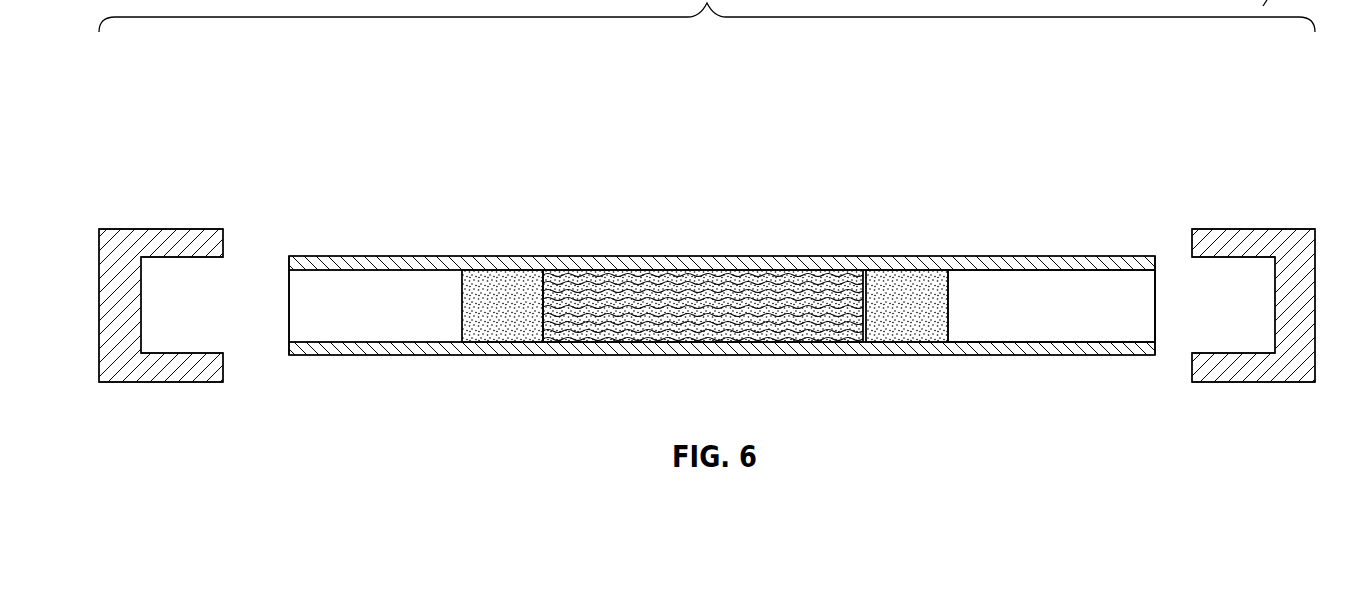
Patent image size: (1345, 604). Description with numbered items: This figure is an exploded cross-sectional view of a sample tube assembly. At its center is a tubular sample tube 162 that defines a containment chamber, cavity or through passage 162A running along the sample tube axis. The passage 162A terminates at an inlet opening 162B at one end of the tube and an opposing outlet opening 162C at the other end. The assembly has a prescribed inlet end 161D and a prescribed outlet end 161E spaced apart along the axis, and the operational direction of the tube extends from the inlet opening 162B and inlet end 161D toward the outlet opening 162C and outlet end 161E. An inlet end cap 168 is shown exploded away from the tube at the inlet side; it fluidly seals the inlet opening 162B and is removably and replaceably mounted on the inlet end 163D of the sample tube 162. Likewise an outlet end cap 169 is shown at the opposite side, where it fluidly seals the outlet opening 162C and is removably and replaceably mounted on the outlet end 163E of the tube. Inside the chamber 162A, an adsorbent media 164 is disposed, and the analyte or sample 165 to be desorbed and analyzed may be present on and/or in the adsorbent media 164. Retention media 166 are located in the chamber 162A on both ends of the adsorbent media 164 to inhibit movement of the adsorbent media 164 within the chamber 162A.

The inlet end 161D is at (143, 128).
The outlet end 161E is at (1286, 143).
The inlet end cap 168 is at (172, 237).
The outlet end cap 169 is at (1277, 236).
The sample tube 162 is at (412, 262).
The through passage 162A is at (1035, 288).
The inlet opening 162B is at (289, 312).
The outlet opening 162C is at (1155, 312).
The inlet end of the sample tube 163D is at (300, 228).
The outlet end of the sample tube 163E is at (1158, 229).
The adsorbent media 164 is at (643, 278).
The sample 165 is at (740, 301).
The retention media 166 is at (500, 278).